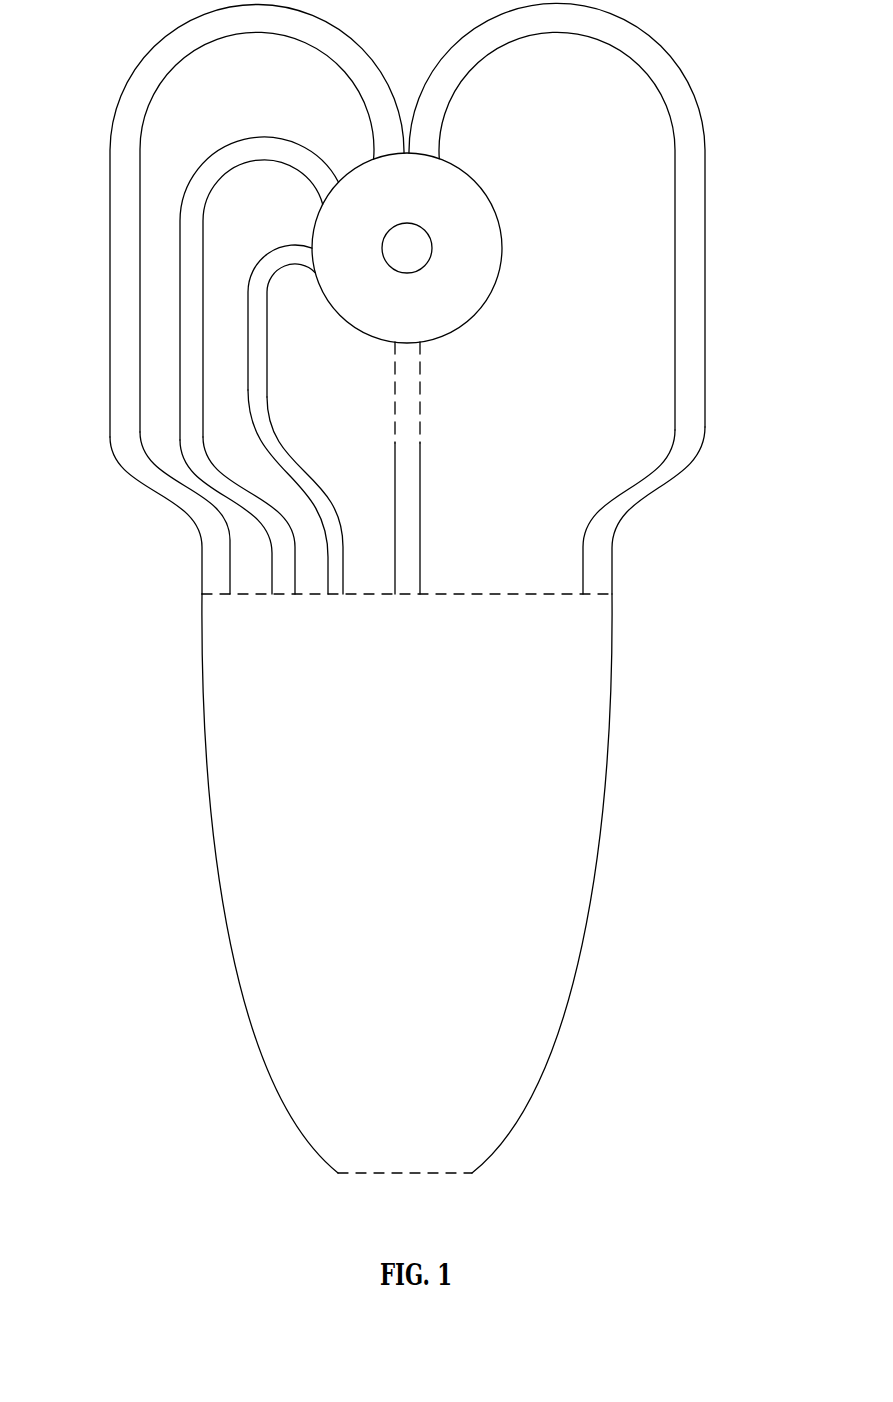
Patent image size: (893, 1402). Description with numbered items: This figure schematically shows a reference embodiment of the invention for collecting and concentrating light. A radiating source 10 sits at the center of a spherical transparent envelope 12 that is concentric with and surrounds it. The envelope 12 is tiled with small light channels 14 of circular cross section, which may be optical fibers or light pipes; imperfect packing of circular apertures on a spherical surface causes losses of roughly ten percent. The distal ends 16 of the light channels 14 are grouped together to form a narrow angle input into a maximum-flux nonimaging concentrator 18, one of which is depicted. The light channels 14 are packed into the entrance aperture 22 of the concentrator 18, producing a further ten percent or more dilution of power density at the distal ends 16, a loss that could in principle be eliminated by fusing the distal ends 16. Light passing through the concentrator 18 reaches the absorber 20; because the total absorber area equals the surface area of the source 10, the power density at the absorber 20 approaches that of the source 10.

The radiating source 10 is at (412, 248).
The spherical transparent envelope 12 is at (478, 315).
The light channels 14 is at (152, 75).
The distal ends 16 is at (215, 557).
The maximum-flux nonimaging concentrator 18 is at (419, 877).
The absorber 20 is at (447, 1175).
The entrance aperture 22 is at (452, 594).